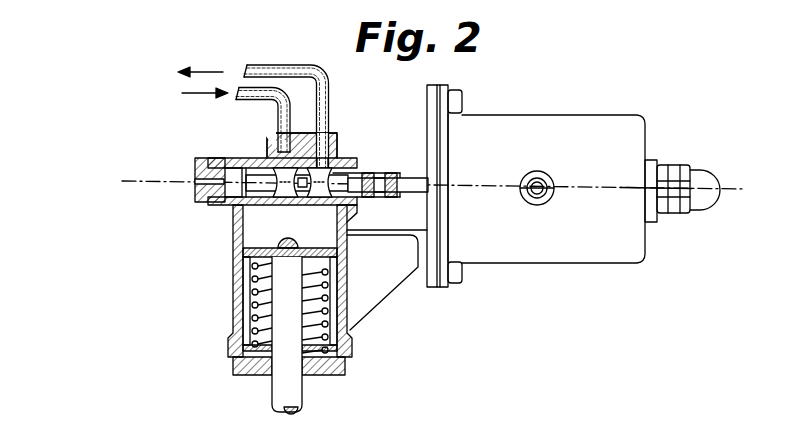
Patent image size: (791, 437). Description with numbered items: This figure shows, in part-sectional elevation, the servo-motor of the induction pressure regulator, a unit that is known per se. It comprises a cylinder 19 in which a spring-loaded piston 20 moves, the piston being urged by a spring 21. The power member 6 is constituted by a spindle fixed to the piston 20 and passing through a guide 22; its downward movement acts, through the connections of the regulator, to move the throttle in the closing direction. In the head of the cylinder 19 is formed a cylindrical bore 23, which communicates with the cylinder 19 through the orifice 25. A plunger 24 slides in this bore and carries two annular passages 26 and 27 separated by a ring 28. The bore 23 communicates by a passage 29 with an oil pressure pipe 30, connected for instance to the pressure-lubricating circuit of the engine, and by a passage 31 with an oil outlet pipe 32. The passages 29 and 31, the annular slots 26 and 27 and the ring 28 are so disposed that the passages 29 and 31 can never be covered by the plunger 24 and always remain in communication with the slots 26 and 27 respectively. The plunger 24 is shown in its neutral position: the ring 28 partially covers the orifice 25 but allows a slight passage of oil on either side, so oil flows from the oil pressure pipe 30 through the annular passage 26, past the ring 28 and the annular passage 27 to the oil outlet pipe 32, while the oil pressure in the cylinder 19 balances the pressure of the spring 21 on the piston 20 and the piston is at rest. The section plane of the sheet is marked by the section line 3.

The section line 3- 3 is at (150, 181).
The power member 6 is at (282, 389).
The cylinder 19 is at (243, 233).
The piston 20 is at (245, 278).
The spring 21 is at (252, 303).
The guide 22 is at (262, 378).
The cylindrical bore 23 is at (233, 180).
The plunger 24 is at (380, 177).
The orifice 25 is at (303, 198).
The annular passage 26 is at (283, 194).
The annular passage 27 is at (320, 194).
The ring 28 is at (344, 185).
The passage 29 is at (268, 157).
The oil pressure pipe 30 is at (236, 90).
The passage 31 is at (338, 150).
The oil outlet pipe 32 is at (322, 94).